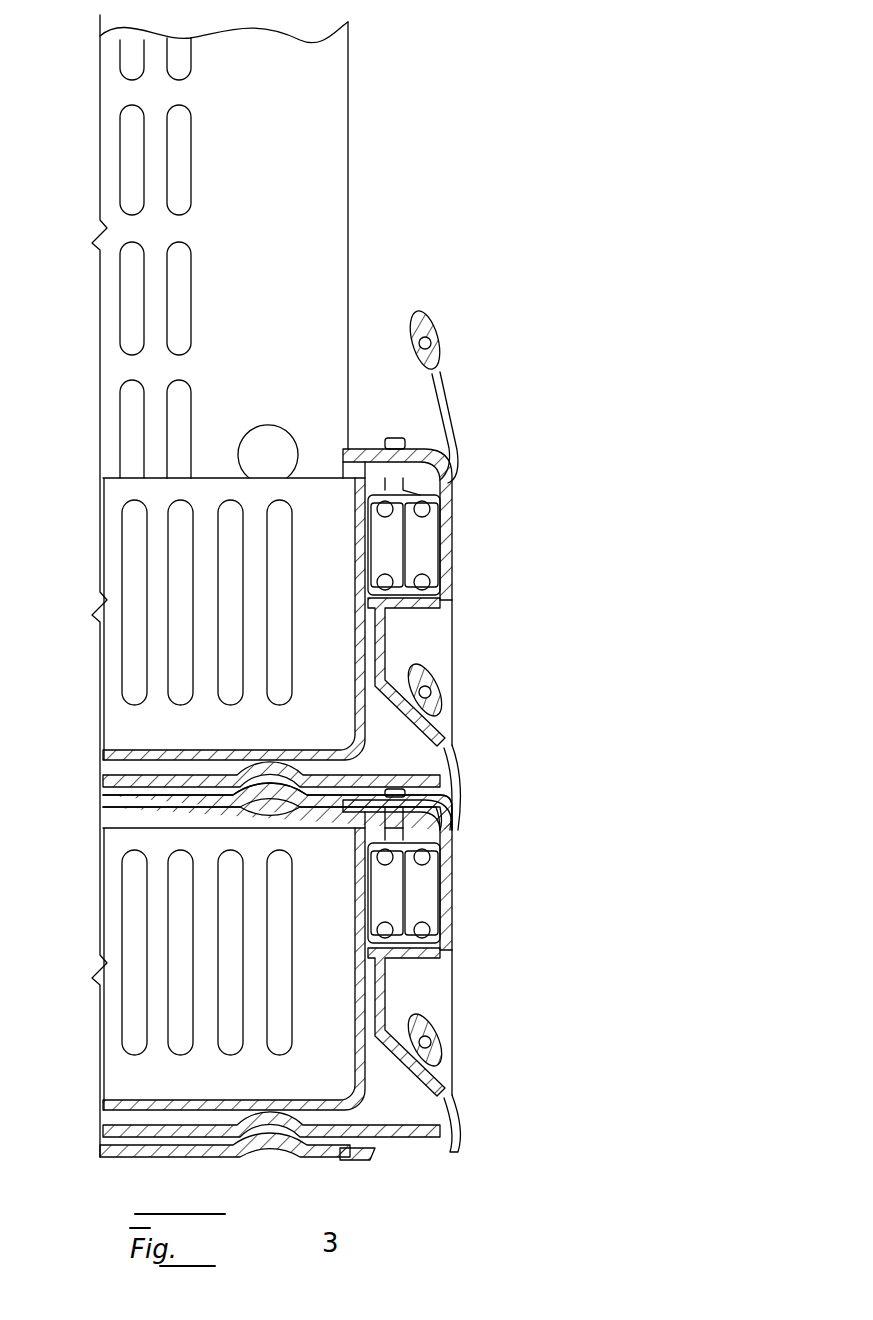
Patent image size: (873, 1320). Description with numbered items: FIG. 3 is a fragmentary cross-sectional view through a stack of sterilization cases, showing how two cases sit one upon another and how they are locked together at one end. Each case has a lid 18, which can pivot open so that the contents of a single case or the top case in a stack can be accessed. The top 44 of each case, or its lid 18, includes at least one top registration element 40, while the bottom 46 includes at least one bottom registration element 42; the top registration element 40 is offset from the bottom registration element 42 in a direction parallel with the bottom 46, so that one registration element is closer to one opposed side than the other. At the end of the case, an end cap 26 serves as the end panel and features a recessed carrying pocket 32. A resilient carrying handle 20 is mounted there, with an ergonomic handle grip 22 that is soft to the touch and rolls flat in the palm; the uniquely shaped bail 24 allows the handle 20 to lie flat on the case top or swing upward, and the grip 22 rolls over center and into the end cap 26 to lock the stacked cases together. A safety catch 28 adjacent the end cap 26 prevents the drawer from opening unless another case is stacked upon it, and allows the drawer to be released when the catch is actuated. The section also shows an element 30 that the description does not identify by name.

The lid 18 is at (233, 602).
The handle 20 is at (483, 689).
The handle grip 22 is at (440, 336).
The bail 24 is at (452, 426).
The end cap 26 is at (455, 697).
The safety catch 28 is at (393, 438).
The connector block 30 is at (404, 710).
The recessed carrying pocket 32 is at (410, 640).
The top registration element 40 is at (268, 442).
The bottom registration element 42 is at (262, 772).
The top 44 is at (180, 800).
The bottom 46 is at (239, 928).